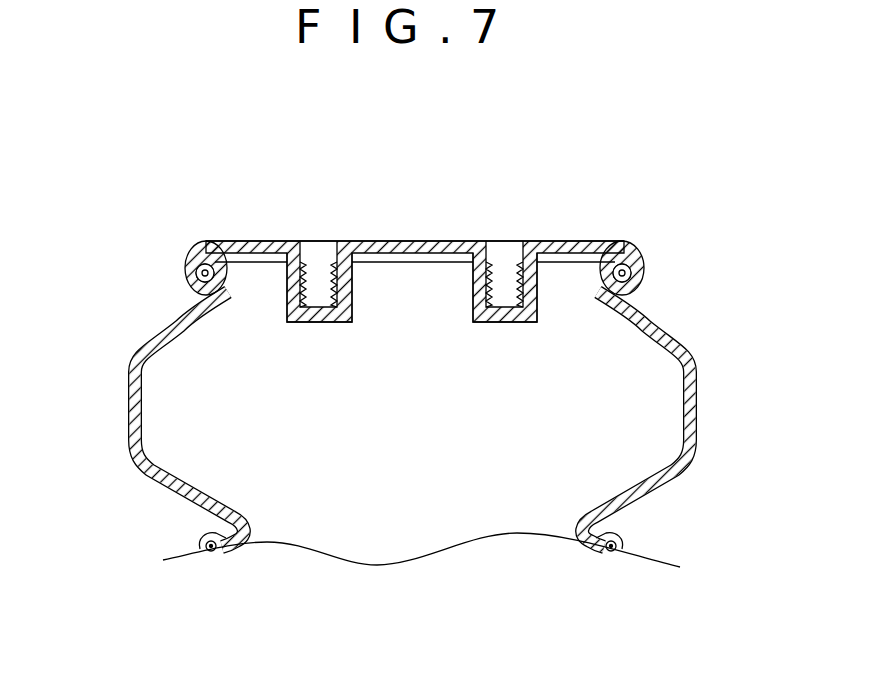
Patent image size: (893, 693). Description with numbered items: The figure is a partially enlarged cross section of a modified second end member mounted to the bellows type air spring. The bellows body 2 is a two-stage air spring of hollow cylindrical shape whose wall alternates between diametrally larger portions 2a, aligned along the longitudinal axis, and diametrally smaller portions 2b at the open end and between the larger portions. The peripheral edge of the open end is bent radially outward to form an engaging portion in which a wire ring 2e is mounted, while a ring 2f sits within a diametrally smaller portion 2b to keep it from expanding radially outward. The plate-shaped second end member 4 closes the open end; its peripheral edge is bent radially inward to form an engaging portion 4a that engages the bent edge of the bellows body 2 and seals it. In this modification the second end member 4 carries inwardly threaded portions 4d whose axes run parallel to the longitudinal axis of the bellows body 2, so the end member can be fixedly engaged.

The bellows body 2 is at (411, 467).
The diametrally larger portion 2a is at (686, 338).
The diametrally smaller portion 2b is at (186, 302).
The wire ring 2e is at (627, 241).
The ring 2f is at (209, 549).
The second end member 4 is at (183, 275).
The engaging portion 4a is at (409, 242).
The inwardly threaded portion 4d is at (317, 241).